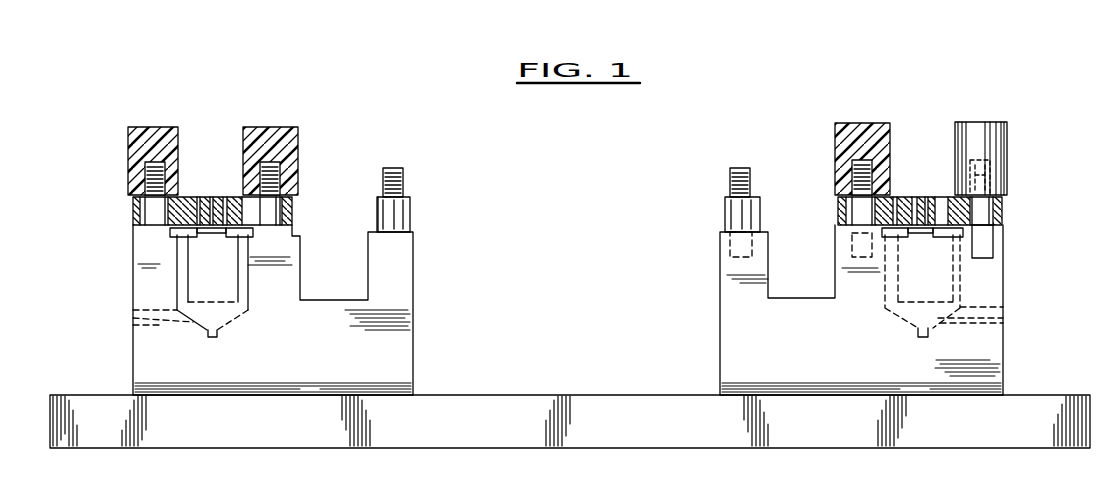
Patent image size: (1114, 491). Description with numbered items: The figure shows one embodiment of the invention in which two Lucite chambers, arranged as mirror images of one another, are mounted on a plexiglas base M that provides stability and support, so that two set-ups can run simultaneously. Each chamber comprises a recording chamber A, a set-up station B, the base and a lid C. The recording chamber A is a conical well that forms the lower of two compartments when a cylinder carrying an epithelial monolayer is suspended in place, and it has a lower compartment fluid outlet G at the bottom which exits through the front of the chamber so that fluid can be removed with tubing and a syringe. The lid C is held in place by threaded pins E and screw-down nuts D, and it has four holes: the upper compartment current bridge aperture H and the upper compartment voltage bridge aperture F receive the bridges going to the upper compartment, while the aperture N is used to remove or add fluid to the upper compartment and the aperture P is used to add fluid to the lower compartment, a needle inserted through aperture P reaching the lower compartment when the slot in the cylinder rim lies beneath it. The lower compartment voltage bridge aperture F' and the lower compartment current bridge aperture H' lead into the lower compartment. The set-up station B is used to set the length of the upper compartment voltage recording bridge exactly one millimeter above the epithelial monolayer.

The plexiglas base M is at (600, 428).
The set-up station B is at (341, 273).
The lid C is at (133, 208).
The screw-down nut D is at (154, 127).
The threaded pins E is at (397, 168).
The aperture for fluid addition and removal from upper compartment N is at (188, 197).
The upper compartment voltage bridge aperture F is at (571, 118).
The upper compartment current bridge aperture H is at (567, 118).
The aperture for fluid addition to lower compartment P is at (237, 197).
The recording chamber A is at (184, 270).
The lower compartment fluid outlet G is at (220, 340).
The lower compartment voltage bridge aperture F' is at (565, 300).
The lower compartment current bridge aperture H' is at (566, 336).